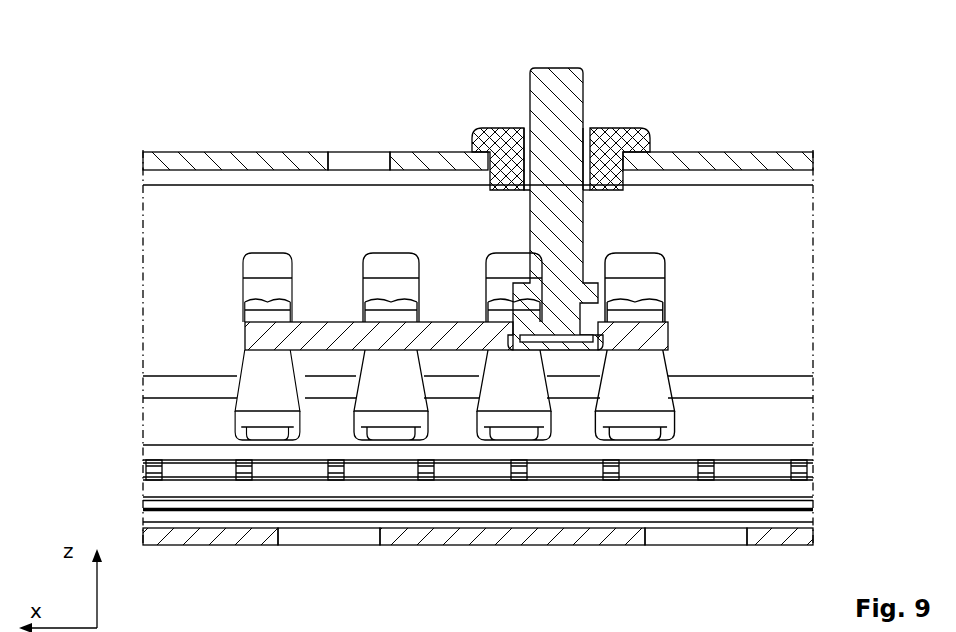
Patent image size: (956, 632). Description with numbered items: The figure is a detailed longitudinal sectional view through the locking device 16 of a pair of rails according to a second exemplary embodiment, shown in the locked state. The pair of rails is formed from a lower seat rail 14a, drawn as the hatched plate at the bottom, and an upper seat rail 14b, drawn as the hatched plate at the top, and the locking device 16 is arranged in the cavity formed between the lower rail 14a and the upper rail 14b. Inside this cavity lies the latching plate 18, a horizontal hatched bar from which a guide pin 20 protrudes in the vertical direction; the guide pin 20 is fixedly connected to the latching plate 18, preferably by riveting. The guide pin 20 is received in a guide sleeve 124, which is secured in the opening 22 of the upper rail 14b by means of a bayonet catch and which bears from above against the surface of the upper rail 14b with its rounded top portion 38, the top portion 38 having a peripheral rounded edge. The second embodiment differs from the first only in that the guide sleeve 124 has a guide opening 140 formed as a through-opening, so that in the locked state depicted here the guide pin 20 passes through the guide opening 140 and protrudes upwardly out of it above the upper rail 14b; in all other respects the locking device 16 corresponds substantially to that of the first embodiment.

The lower seat rail 14a is at (429, 537).
The upper seat rail 14b is at (311, 163).
The locking device 16 is at (781, 232).
The latching plate 18 is at (268, 337).
The guide pin 20 is at (541, 140).
The opening 22 is at (625, 158).
The top portion 38 is at (484, 143).
The guide sleeve 124 is at (607, 143).
The guide opening 140 is at (586, 132).